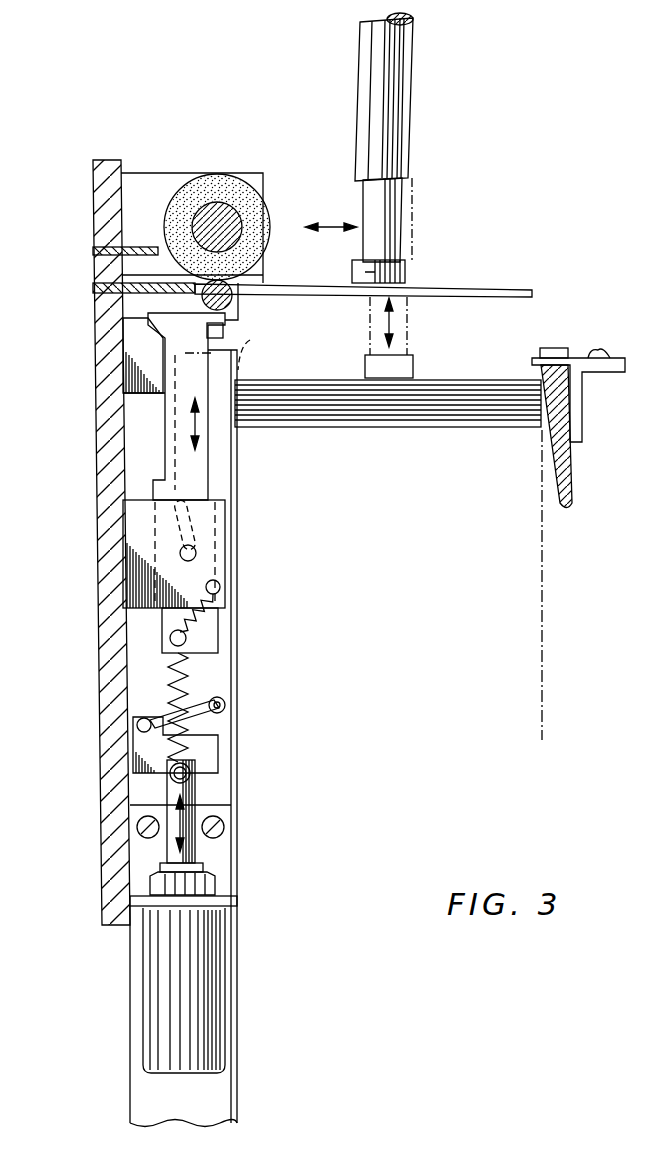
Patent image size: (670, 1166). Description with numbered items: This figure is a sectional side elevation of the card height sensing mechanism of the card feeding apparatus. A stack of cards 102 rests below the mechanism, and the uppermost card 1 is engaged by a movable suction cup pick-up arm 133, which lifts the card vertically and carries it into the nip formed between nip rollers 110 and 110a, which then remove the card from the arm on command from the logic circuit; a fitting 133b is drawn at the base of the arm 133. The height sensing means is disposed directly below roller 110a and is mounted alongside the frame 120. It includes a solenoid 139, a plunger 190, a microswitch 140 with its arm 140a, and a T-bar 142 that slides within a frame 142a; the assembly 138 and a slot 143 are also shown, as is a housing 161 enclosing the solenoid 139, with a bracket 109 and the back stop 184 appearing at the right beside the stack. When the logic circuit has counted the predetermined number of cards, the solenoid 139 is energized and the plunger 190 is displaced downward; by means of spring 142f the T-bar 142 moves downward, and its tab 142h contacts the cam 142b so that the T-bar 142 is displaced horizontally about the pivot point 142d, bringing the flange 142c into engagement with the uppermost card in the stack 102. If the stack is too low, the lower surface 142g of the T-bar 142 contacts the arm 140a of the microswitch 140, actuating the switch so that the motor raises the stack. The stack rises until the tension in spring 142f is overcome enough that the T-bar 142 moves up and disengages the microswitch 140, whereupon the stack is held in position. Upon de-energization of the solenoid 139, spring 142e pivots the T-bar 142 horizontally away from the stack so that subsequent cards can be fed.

The card 1 is at (535, 287).
The stack of cards 102 is at (430, 380).
The bracket 109 is at (533, 355).
The nip roller 110 is at (215, 183).
The nip roller 110a is at (232, 297).
The frame 120 is at (118, 702).
The suction cup pick-up arm 133 is at (373, 88).
The handle bracket 133b is at (405, 281).
The slide assembly 138 is at (140, 455).
The solenoid 139 is at (162, 980).
The microswitch 140 is at (207, 762).
The arm of microswitch 140a is at (220, 725).
The T-bar 142 is at (200, 452).
The frame 142a is at (145, 528).
The cam 142b is at (145, 345).
The flange 142c is at (222, 330).
The pivot point 142d is at (197, 553).
The spring 142e is at (206, 608).
The spring 142f is at (190, 693).
The lower surface of bar 142g is at (205, 648).
The tab 142h is at (97, 300).
The slot 143 is at (192, 510).
The housing 161 is at (152, 1100).
The back stop 184 is at (565, 470).
The plunger 190 is at (195, 843).